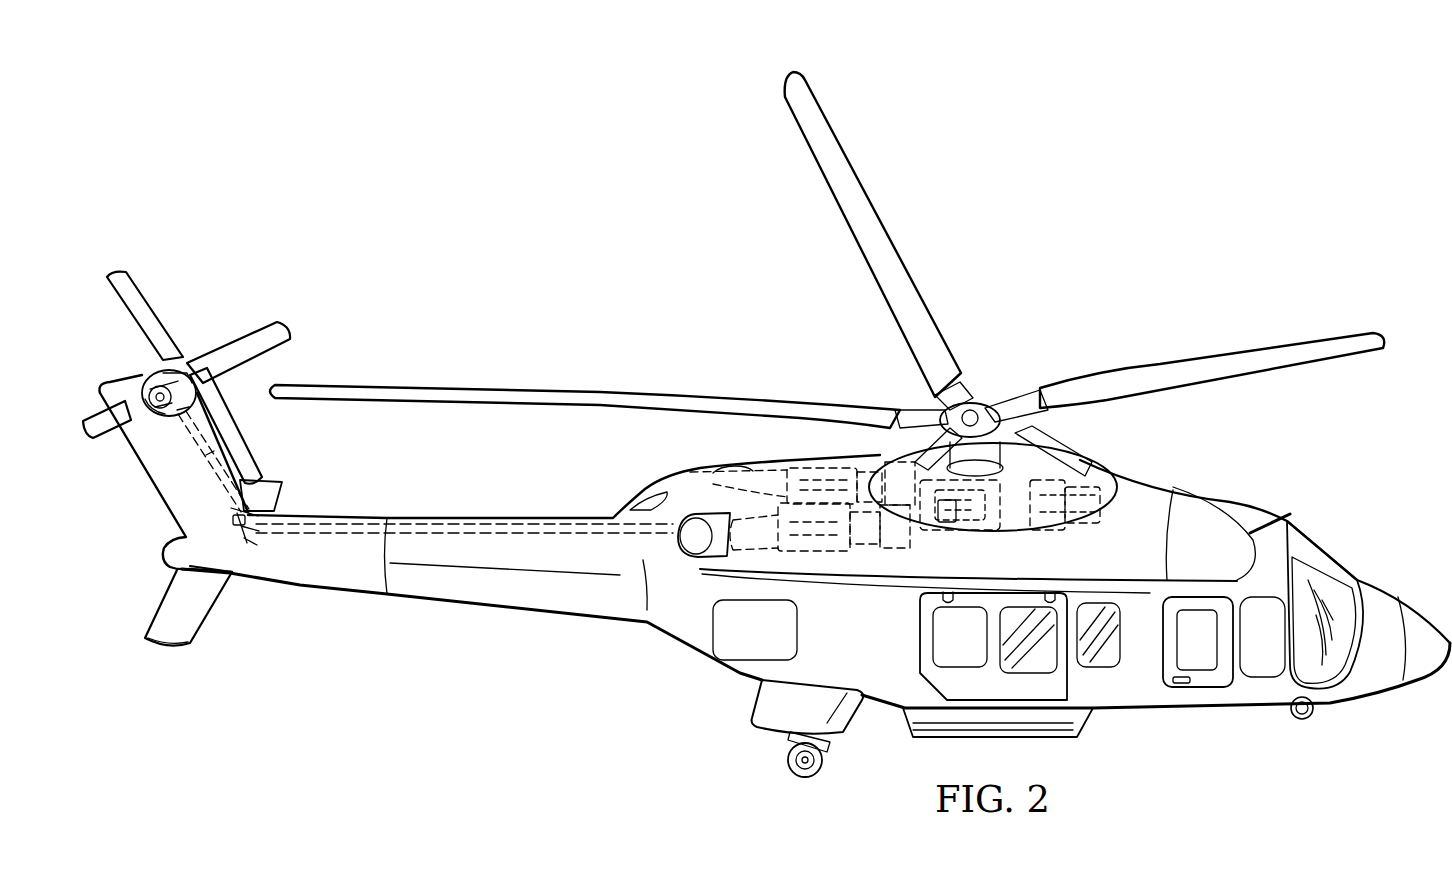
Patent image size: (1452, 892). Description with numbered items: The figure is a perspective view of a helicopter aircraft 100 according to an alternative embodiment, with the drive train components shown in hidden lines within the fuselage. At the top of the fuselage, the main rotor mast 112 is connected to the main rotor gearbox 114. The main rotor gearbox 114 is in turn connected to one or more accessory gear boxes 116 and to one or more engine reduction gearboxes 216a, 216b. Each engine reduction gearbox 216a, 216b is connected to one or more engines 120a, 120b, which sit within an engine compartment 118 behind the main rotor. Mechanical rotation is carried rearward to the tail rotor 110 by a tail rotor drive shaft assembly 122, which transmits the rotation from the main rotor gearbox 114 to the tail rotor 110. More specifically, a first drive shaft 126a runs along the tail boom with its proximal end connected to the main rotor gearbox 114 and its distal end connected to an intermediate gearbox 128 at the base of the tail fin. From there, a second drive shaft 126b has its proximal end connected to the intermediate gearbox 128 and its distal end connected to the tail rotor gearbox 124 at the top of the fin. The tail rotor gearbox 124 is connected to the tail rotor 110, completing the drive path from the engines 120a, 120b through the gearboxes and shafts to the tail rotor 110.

The aircraft 100 is at (1228, 124).
The tail rotor 110 is at (148, 303).
The main rotor mast 112 is at (942, 523).
The main rotor gearbox 114 is at (978, 532).
The accessory gear box 116 is at (1075, 525).
The engine compartment 118 is at (848, 447).
The engine 120a is at (807, 540).
The engine 120b is at (805, 460).
The tail rotor drive shaft assembly 122 is at (350, 495).
The tail rotor gearbox 124 is at (147, 373).
The first drive shaft 126a is at (480, 518).
The second drive shaft 126b is at (230, 457).
The intermediate gearbox 128 is at (240, 545).
The engine reduction gearbox 216a is at (867, 550).
The engine reduction gearbox 216b is at (865, 462).